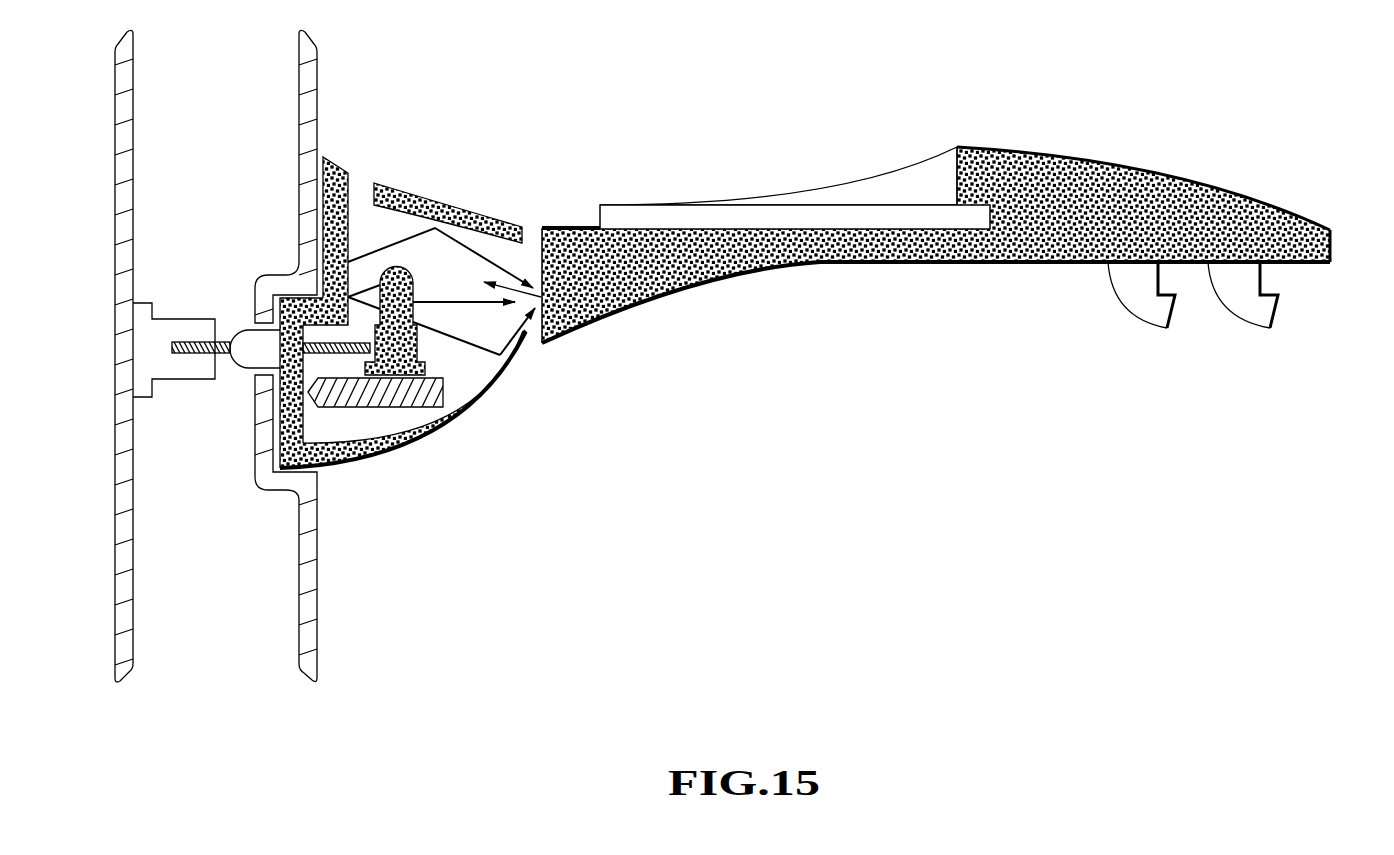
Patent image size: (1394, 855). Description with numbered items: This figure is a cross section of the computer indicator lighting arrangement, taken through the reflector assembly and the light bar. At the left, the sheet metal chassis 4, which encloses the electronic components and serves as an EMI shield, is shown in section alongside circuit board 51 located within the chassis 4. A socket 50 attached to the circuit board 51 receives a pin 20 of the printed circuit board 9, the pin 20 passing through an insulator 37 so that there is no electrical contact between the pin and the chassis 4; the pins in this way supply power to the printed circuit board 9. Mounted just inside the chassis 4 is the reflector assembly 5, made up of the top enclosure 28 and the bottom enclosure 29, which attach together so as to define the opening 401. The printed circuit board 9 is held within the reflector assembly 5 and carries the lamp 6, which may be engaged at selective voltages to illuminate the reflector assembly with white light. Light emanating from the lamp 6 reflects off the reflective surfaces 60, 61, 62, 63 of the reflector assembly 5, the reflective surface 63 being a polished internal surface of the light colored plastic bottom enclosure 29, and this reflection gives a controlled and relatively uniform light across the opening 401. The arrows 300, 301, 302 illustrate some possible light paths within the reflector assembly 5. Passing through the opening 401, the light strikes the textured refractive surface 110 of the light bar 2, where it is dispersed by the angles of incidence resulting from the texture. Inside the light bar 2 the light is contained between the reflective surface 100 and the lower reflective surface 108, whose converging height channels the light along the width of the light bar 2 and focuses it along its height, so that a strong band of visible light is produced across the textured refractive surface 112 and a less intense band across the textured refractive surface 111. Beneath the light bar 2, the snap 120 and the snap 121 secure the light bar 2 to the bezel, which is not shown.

The circuit board 51 is at (135, 118).
The chassis 4 is at (298, 80).
The socket 50 is at (187, 319).
The pin 20 is at (200, 356).
The insulator 37 is at (246, 330).
The reflector assembly 5 is at (376, 335).
The reflective surface 61 is at (356, 244).
The reflective surface 62 is at (311, 418).
The reflective surface 63 is at (366, 421).
The bottom enclosure 29 is at (500, 400).
The reflective surface 60 is at (444, 193).
The top enclosure 28 is at (438, 210).
The lamp 6 is at (424, 366).
The printed circuit board 9 is at (409, 400).
The arrow 302 is at (470, 256).
The arrow 301 is at (458, 303).
The arrow 300 is at (530, 324).
The light bar 2 is at (923, 245).
The reflective surface 100 is at (671, 220).
The refractive surface 110 is at (540, 269).
The opening 401 is at (541, 291).
The lower reflective surface 108 is at (715, 285).
The refractive surface 111 is at (1142, 157).
The refractive surface 112 is at (1335, 236).
The snap 120 is at (1122, 300).
The snap 121 is at (1248, 325).